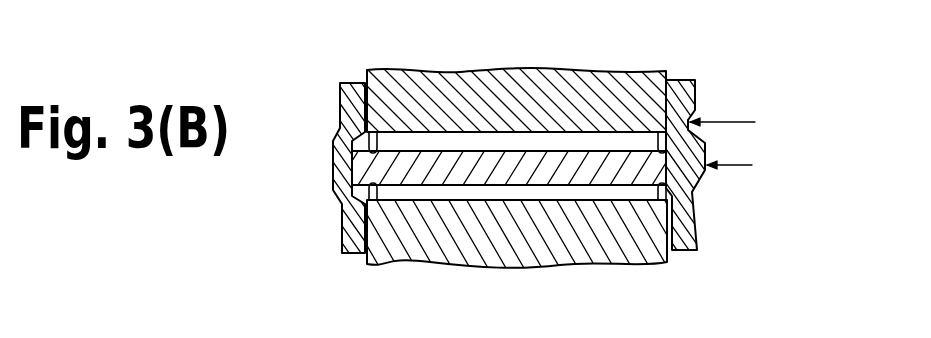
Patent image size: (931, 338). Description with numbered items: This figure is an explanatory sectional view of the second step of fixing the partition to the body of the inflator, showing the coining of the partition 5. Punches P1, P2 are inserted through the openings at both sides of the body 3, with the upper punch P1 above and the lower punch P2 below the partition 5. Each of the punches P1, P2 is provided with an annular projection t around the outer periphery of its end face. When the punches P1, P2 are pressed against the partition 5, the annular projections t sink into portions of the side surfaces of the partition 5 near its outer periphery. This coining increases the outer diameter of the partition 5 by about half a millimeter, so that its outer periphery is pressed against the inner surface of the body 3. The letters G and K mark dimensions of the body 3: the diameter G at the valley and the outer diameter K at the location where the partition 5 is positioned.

The annular projection t is at (380, 193).
The punch P1 is at (563, 72).
The punch P2 is at (579, 250).
The partition 5 is at (471, 176).
The body 3 is at (688, 233).
The diameter of the body at the valley G is at (340, 122).
The outer diameter of the body at the partition location K is at (333, 165).